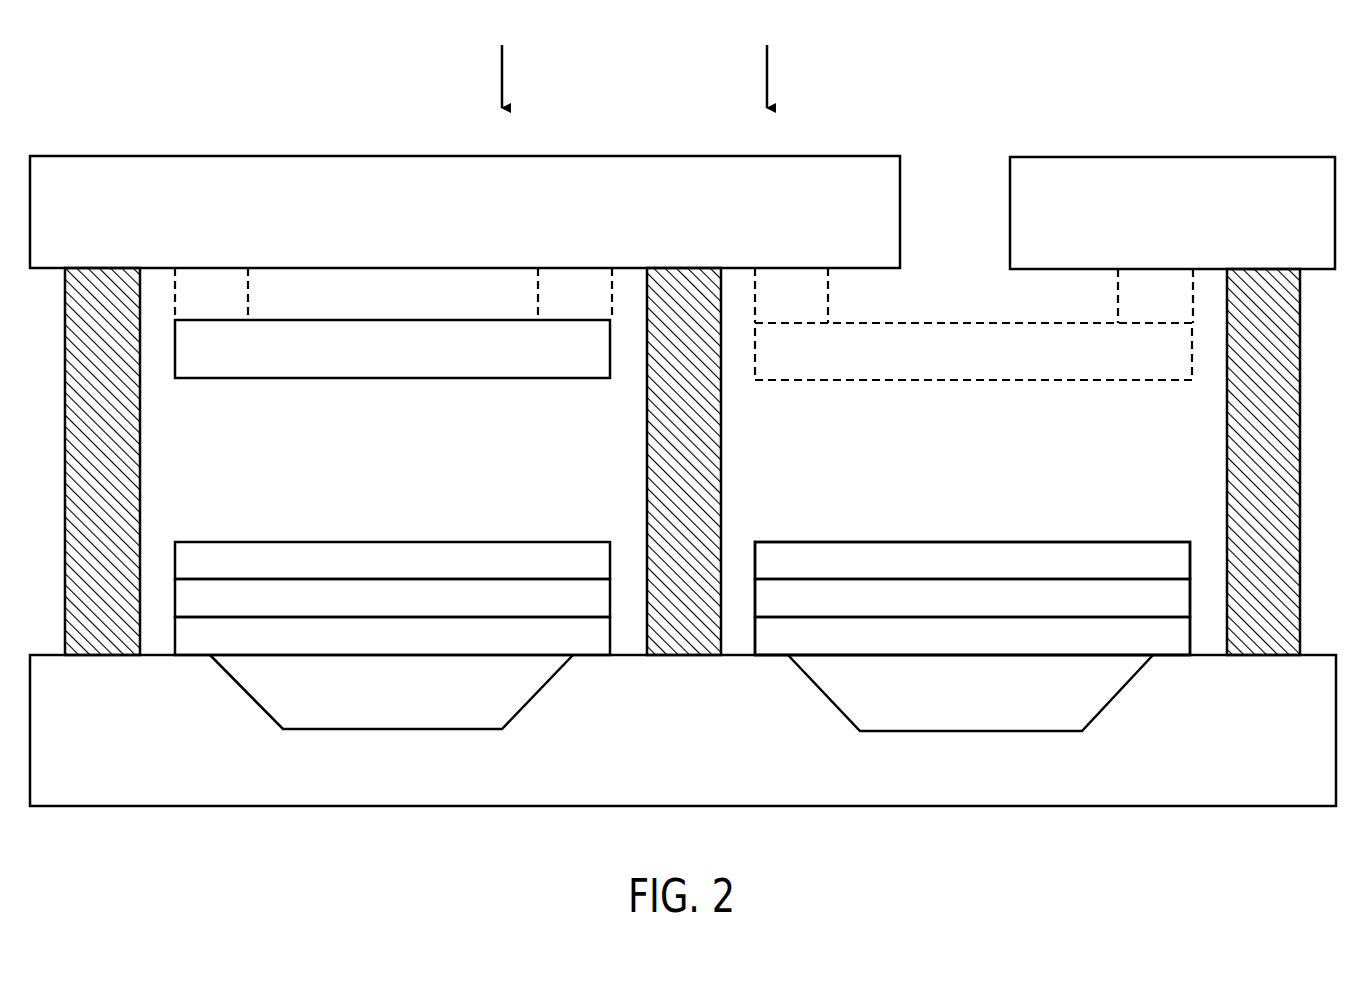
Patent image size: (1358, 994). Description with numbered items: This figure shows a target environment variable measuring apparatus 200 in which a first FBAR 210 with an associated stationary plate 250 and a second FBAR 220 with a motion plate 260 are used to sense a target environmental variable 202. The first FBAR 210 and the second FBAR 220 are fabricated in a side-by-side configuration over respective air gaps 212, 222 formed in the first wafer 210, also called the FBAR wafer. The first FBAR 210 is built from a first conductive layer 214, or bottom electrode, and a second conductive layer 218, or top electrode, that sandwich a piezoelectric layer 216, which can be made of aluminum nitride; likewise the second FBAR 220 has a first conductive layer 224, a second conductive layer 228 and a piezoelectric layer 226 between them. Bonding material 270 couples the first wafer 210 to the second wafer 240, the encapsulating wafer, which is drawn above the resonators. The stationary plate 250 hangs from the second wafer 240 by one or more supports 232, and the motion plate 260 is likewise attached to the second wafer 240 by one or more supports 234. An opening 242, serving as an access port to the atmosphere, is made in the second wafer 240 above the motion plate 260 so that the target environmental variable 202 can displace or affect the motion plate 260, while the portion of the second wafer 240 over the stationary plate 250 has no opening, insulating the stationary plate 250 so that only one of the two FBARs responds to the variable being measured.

The target environment variable (TEV) measuring apparatus 200 is at (272, 82).
The target environmental variable (TEV) 202 is at (634, 83).
The first FBAR / first wafer (FBAR wafer) 210 is at (900, 792).
The air gap 212 is at (408, 722).
The first conductive layer (bottom electrode) 214 is at (410, 647).
The piezoelectric (PZ) layer 216 is at (410, 611).
The second conductive layer (top electrode) 218 is at (410, 572).
The second FBAR 220 is at (972, 532).
The air gap 222 is at (992, 712).
The first conductive layer (bottom electrode) 224 is at (990, 647).
The piezoelectric (PZ) layer 226 is at (990, 611).
The second conductive layer (top electrode) 228 is at (990, 572).
The supports 232 is at (230, 309).
The supports 234 is at (811, 309).
The second wafer (encapsulating wafer) 240 is at (1192, 226).
The opening (access port) 242 is at (956, 107).
The stationary plate 250 is at (392, 349).
The motion plate 260 is at (973, 351).
The bonding material 270 is at (118, 476).